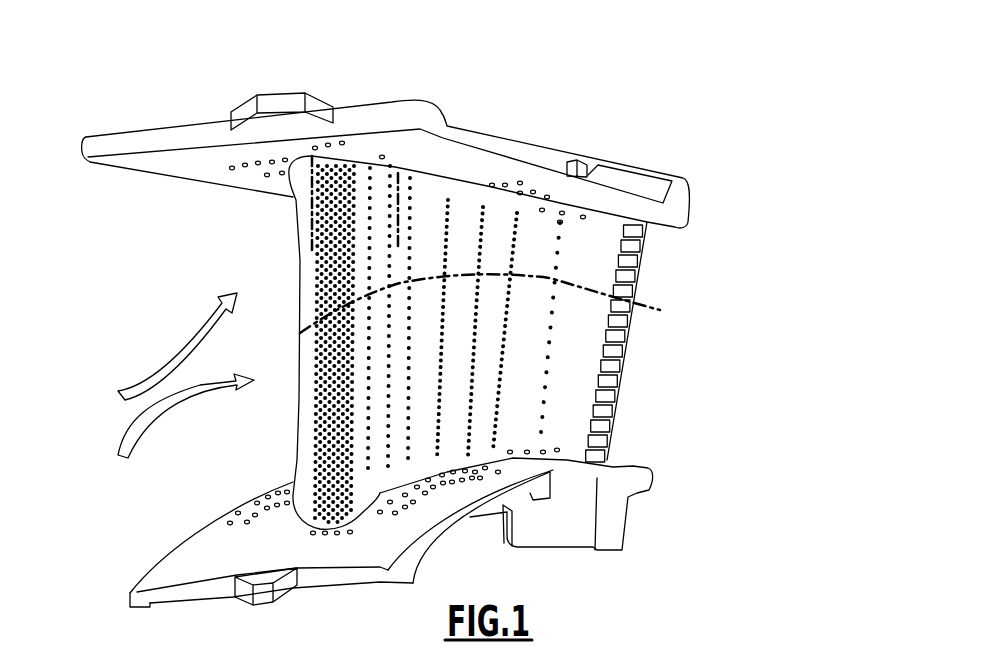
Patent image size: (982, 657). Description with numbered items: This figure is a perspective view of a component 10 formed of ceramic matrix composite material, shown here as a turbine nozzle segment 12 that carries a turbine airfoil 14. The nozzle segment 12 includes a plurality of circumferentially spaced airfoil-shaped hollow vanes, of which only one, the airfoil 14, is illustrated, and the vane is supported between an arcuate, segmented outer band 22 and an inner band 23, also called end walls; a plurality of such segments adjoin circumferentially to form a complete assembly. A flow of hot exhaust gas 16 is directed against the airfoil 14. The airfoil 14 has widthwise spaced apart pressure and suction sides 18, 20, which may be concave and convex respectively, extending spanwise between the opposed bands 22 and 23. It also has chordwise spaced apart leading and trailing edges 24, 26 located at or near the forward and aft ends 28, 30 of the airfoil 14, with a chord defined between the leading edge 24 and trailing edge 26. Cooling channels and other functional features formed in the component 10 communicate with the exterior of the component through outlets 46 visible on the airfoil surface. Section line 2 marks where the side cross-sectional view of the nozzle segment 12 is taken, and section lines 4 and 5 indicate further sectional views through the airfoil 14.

The component 10 is at (117, 81).
The turbine nozzle segment 12 is at (768, 175).
The turbine airfoil 14 is at (640, 250).
The flow of hot exhaust gas 16 is at (157, 390).
The airfoil pressure side 18 is at (563, 408).
The airfoil suction side 20 is at (280, 434).
The outer band 22 is at (197, 162).
The inner band 23 is at (167, 568).
The airfoil leading edge 24 is at (313, 427).
The airfoil trailing edge 26 is at (613, 363).
The forward end 28 is at (300, 275).
The aft end 30 is at (613, 392).
The outlet 46 is at (310, 382).
The section line 2- 2 is at (300, 334).
The section line 4- 4 is at (312, 156).
The section line 5- 5 is at (398, 173).